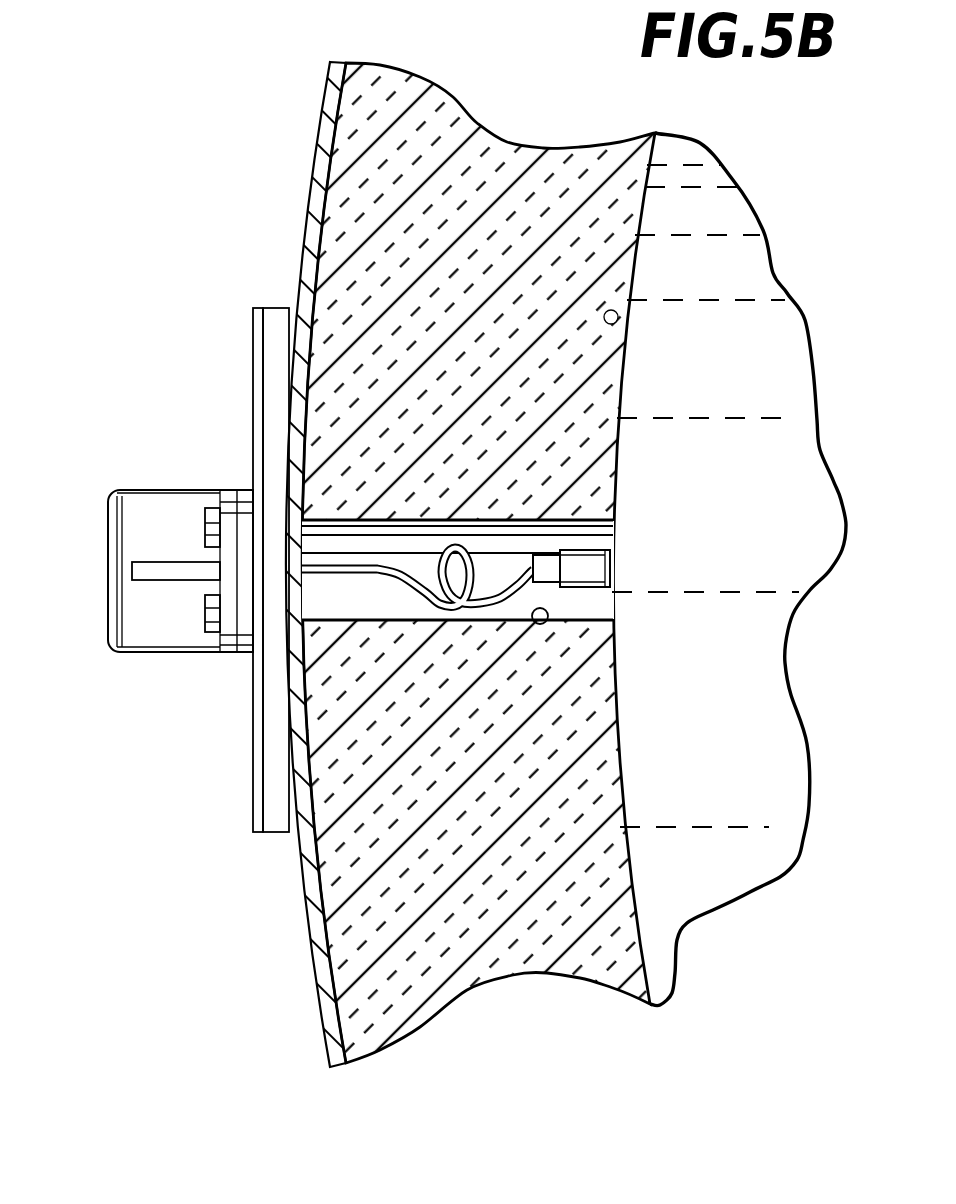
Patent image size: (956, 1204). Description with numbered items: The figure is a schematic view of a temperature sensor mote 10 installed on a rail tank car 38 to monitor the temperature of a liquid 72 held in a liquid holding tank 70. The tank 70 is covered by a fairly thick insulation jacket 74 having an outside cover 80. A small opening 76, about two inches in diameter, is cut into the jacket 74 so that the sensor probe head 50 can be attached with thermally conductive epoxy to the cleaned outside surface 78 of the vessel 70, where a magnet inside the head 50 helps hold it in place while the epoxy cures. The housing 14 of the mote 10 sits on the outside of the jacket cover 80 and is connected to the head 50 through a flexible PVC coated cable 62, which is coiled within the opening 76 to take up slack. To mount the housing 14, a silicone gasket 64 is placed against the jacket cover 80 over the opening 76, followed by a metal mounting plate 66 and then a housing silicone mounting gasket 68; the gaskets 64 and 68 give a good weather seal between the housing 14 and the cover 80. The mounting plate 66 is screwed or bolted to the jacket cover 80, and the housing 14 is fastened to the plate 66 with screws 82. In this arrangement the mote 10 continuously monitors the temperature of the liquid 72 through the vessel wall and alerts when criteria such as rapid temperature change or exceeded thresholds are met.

The temperature sensor mote 10 is at (141, 565).
The housing 14 is at (135, 499).
The rail tank car 38 is at (516, 564).
The sensor probe head 50 is at (592, 552).
The cable 62 is at (403, 585).
The silicone gasket 64 is at (270, 832).
The metal mounting plate 66 is at (255, 748).
The housing silicone mounting gasket 68 is at (243, 652).
The liquid holding tank 70 is at (618, 797).
The liquid 72 is at (779, 487).
The insulation jacket 74 is at (350, 143).
The opening 76 is at (547, 622).
The outside surface 78 is at (618, 323).
The outside cover 80 is at (300, 234).
The screws 82 is at (205, 513).